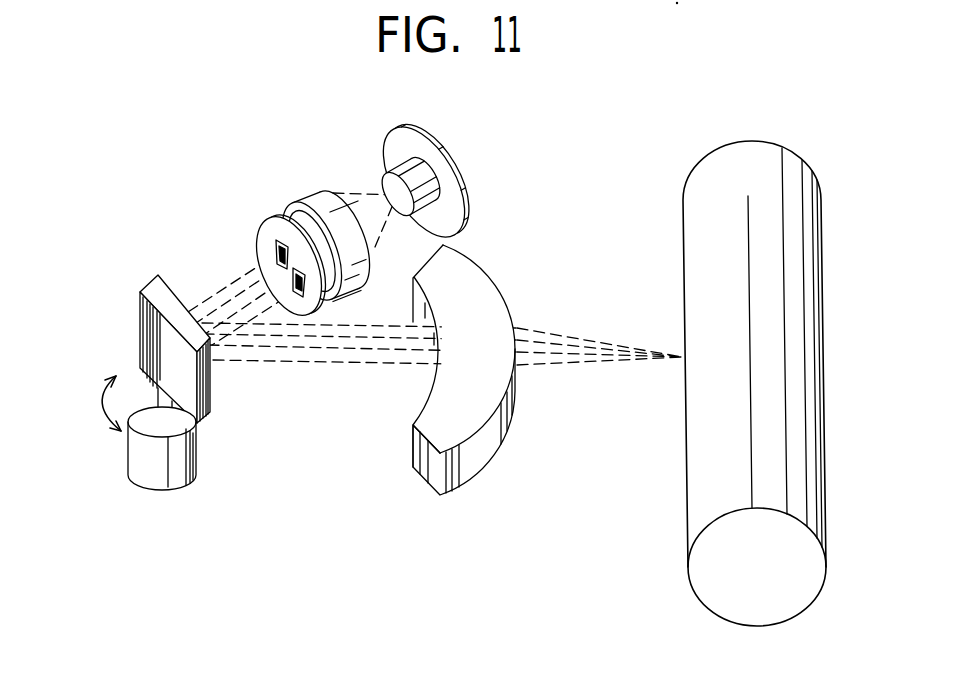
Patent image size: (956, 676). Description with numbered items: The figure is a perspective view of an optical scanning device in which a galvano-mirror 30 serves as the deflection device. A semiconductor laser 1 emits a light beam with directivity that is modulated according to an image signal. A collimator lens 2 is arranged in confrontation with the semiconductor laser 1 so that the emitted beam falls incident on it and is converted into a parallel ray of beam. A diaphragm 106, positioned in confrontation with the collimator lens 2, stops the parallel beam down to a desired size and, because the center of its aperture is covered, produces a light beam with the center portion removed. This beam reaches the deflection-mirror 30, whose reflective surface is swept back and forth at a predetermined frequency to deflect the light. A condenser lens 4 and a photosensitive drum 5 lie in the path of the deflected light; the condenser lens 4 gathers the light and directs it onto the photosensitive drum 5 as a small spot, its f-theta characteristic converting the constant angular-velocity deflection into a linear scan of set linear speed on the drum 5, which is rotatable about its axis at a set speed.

The semiconductor laser 1 is at (398, 148).
The collimator lens 2 is at (312, 203).
The diaphragm 106 is at (267, 240).
The galvano-mirror 30 is at (141, 316).
The condenser lens 4 is at (440, 405).
The photosensitive drum 5 is at (700, 228).